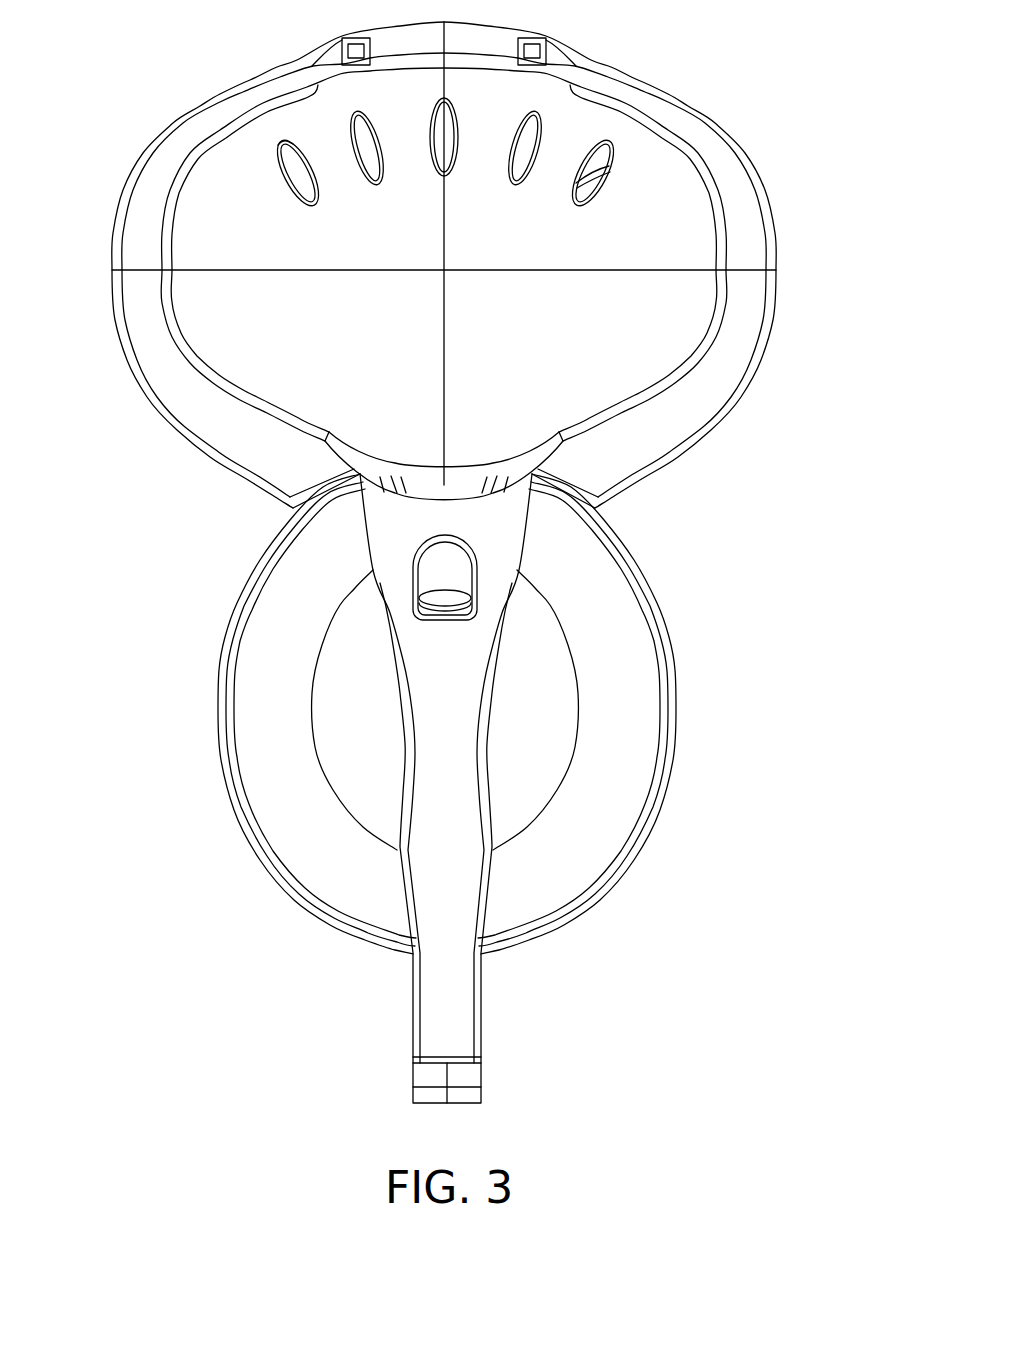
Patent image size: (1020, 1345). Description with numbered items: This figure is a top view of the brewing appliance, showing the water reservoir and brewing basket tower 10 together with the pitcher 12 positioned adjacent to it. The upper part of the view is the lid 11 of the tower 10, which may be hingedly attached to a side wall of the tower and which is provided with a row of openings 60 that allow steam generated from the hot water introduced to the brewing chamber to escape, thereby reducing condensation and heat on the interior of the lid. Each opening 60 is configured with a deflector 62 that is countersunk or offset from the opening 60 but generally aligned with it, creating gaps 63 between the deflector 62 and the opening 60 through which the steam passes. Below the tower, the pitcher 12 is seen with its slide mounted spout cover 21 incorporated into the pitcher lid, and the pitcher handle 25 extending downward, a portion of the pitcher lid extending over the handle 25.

The water reservoir and brewing basket tower 10 is at (754, 387).
The lid 11 is at (697, 293).
The pitcher 12 is at (644, 857).
The spout cover 21 is at (450, 497).
The pitcher handle 25 is at (470, 1095).
The openings 60 is at (293, 200).
The deflector 62 is at (307, 197).
The gaps 63 is at (290, 149).